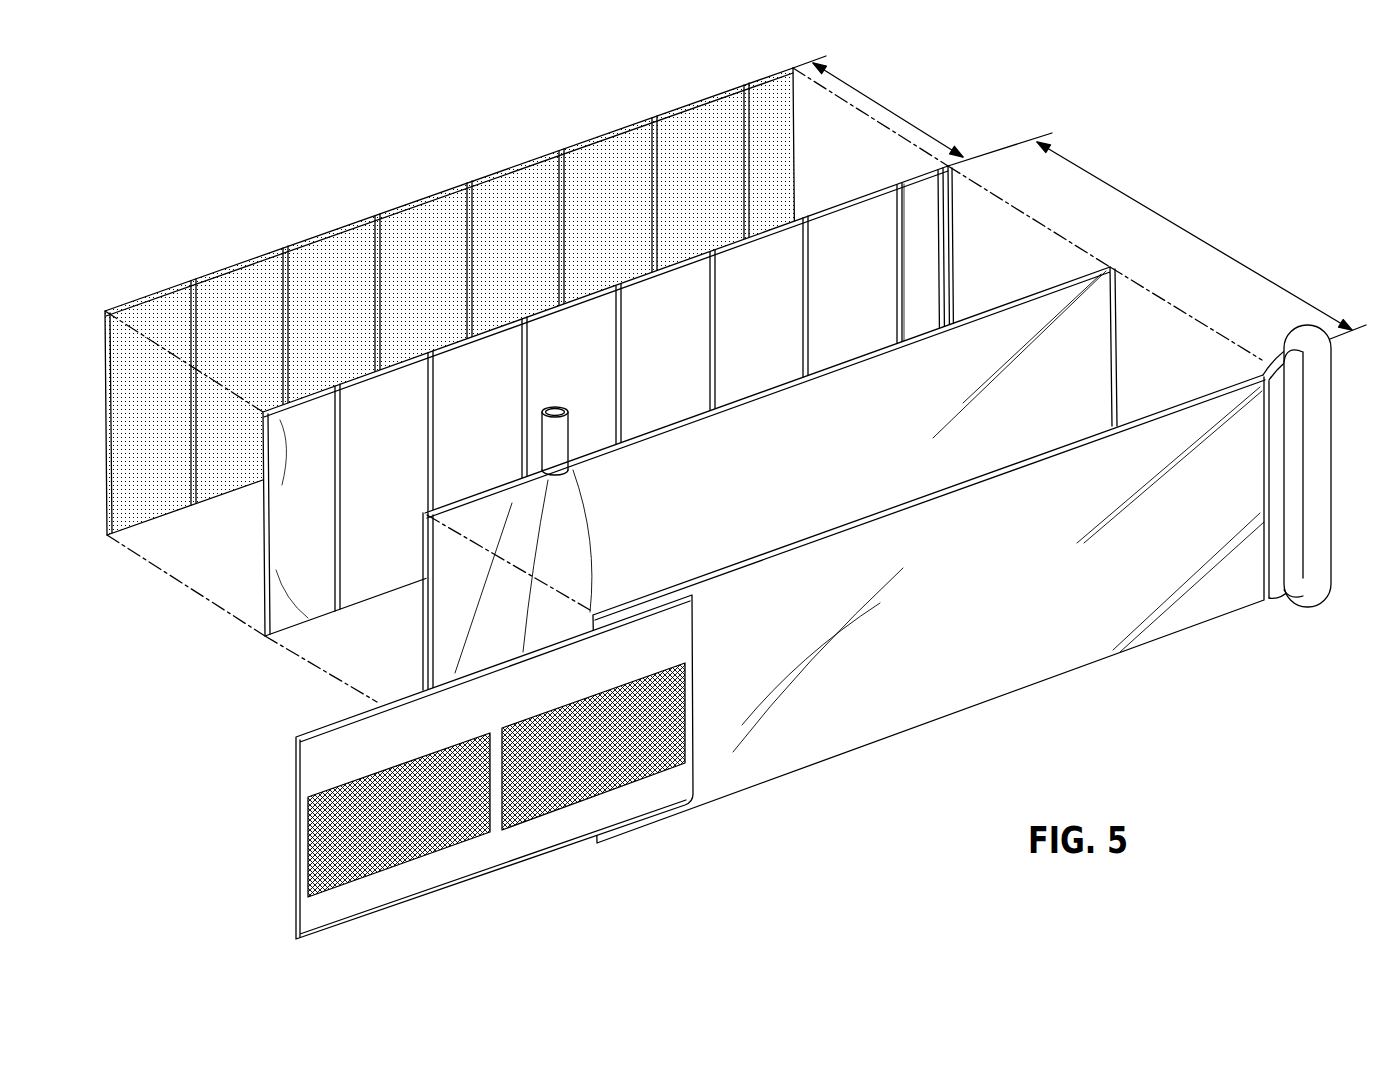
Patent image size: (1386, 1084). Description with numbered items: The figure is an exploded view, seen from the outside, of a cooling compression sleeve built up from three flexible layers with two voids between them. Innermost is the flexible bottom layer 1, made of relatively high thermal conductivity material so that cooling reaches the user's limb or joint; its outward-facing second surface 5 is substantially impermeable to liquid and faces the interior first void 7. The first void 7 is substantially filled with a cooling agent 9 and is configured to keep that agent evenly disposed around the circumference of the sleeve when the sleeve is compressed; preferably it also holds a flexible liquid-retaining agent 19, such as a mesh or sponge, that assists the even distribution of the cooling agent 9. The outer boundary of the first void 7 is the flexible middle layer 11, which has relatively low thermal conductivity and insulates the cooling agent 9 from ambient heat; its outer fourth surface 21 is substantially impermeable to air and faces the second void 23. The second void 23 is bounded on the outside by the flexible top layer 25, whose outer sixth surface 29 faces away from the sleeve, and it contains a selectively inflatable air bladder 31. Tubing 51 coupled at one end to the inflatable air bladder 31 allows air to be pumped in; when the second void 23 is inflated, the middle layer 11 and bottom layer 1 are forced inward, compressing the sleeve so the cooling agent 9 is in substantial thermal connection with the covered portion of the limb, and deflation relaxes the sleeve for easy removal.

The bottom layer 1 is at (553, 385).
The second surface 5 is at (617, 145).
The first void 7 is at (900, 112).
The cooling agent 9 is at (632, 392).
The middle layer 11 is at (638, 400).
The flexible liquid-retaining agent 19 is at (928, 220).
The fourth surface 21 is at (930, 258).
The second void 23 is at (1277, 283).
The top layer 25 is at (1060, 655).
The sixth surface 29 is at (313, 755).
The inflatable air bladder 31 is at (1098, 330).
The tubing 51 is at (555, 406).